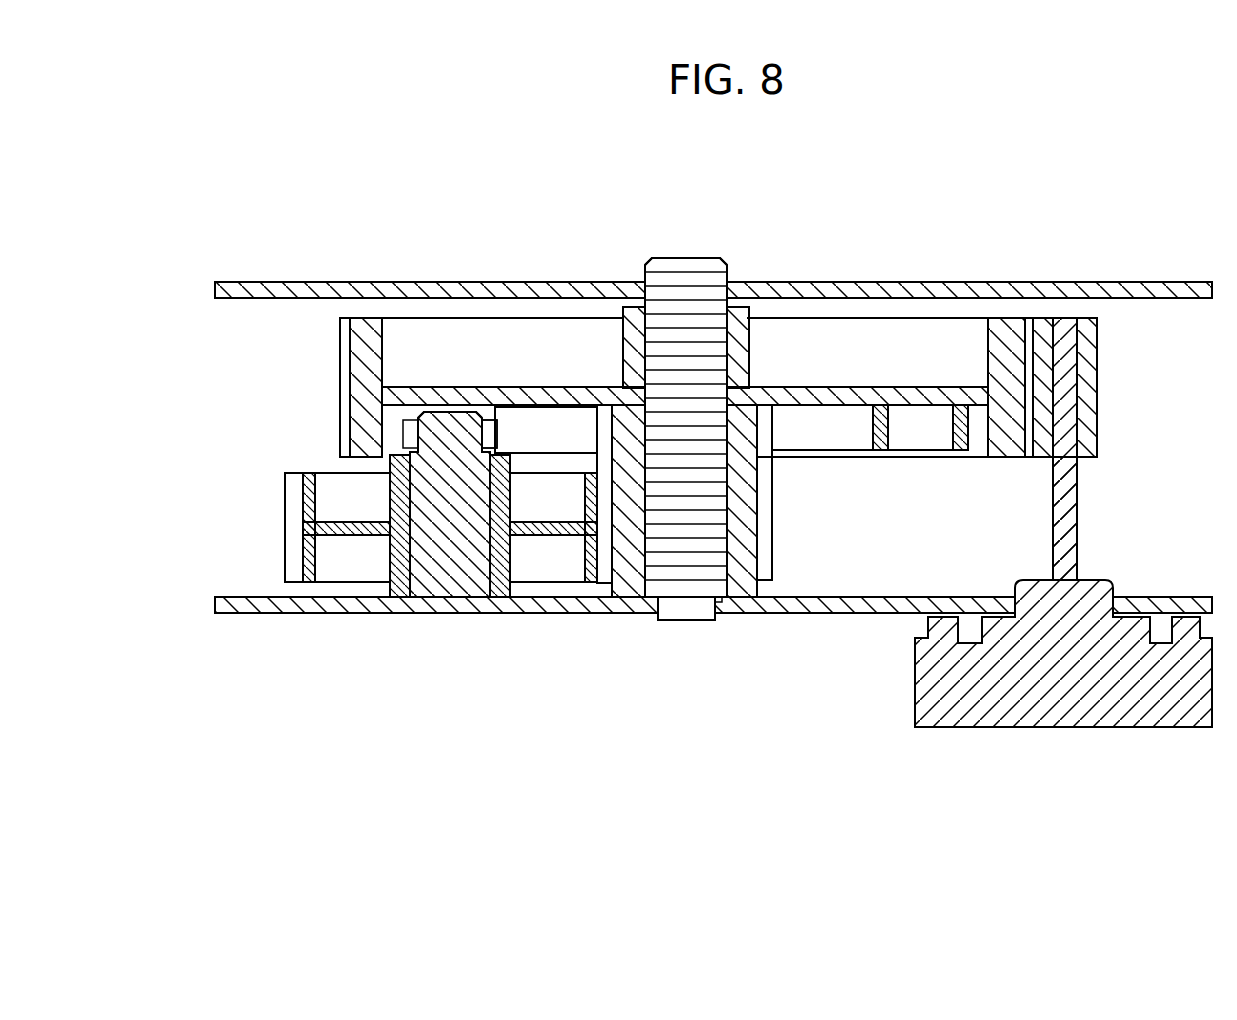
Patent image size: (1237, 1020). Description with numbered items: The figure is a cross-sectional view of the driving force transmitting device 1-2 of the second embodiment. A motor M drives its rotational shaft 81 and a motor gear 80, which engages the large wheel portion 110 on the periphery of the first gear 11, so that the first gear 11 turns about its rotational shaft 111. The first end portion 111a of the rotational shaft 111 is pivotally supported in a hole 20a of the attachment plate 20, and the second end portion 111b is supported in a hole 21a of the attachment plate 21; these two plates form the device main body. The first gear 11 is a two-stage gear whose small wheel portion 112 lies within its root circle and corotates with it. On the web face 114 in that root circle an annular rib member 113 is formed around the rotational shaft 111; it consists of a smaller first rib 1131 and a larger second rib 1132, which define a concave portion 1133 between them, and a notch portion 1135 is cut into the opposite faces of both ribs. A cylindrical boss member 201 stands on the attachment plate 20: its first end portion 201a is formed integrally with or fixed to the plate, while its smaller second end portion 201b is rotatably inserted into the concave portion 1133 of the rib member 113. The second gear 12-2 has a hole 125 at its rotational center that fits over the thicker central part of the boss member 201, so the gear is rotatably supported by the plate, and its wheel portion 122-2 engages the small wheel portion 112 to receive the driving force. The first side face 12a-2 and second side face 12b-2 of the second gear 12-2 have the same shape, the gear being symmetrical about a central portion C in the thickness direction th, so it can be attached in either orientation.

The driving force transmitting device 1-2 is at (842, 198).
The first gear 11 is at (878, 314).
The large wheel portion 110 is at (340, 340).
The second rib 1132 is at (387, 415).
The rib member 113 is at (390, 400).
The first rib 1131 is at (503, 425).
The concave portion 1133 is at (458, 412).
The notch portion 1135 is at (492, 427).
The web face 114 is at (535, 422).
The hole 125 is at (393, 425).
The rotational shaft 111 is at (690, 288).
The first end portion 111a is at (690, 622).
The second end portion 111b is at (715, 262).
The small wheel portion 112 is at (778, 508).
The second gear 12-2 is at (278, 470).
The first side face 12a-2 is at (340, 567).
The second side face 12b-2 is at (335, 490).
The wheel portion 122-2 is at (605, 580).
The attachment plate 20 is at (820, 614).
The hole 20a is at (722, 613).
The boss member 201 is at (450, 565).
The first end portion 201a is at (420, 595).
The second end portion 201b is at (438, 420).
The attachment plate 21 is at (262, 283).
The hole 21a is at (643, 285).
The motor gear 80 is at (1098, 386).
The rotational shaft 81 is at (1078, 505).
The motor M is at (1113, 583).
The thickness direction th is at (233, 475).
The central portion C is at (640, 528).